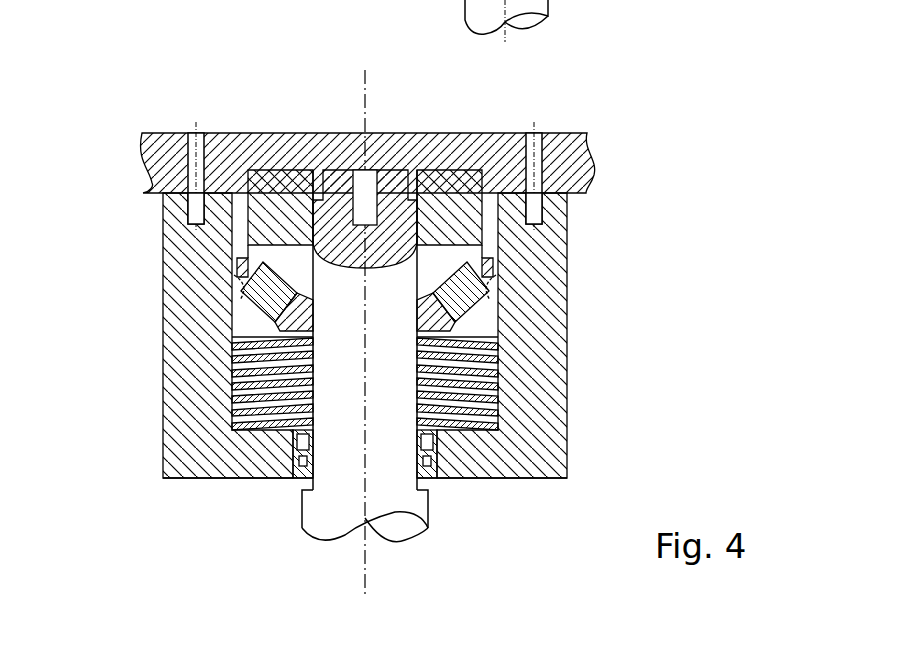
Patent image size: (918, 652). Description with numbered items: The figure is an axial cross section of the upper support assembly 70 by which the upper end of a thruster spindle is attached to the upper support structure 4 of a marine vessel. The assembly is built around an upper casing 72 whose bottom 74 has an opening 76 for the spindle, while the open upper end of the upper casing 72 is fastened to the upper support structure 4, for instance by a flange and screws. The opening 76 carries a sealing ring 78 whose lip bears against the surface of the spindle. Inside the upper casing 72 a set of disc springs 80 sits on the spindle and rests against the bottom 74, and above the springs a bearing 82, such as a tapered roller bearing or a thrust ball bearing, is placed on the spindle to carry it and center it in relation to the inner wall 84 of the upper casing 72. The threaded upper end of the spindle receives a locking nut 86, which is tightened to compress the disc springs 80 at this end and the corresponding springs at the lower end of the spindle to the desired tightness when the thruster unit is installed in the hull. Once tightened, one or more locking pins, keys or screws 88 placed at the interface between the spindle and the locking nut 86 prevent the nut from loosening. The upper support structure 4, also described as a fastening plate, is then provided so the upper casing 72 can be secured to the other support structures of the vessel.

The upper support assembly 70 is at (186, 107).
The upper support structure 4 is at (158, 152).
The upper casing 72 is at (542, 263).
The bottom 74 is at (263, 455).
The opening 76 is at (300, 444).
The sealing ring 78 is at (445, 480).
The set of disc springs 80 is at (480, 372).
The bearing 82 is at (465, 298).
The inner wall 84 is at (230, 298).
The locking nut 86 is at (283, 200).
The locking pins, keys or screws 88 is at (413, 183).